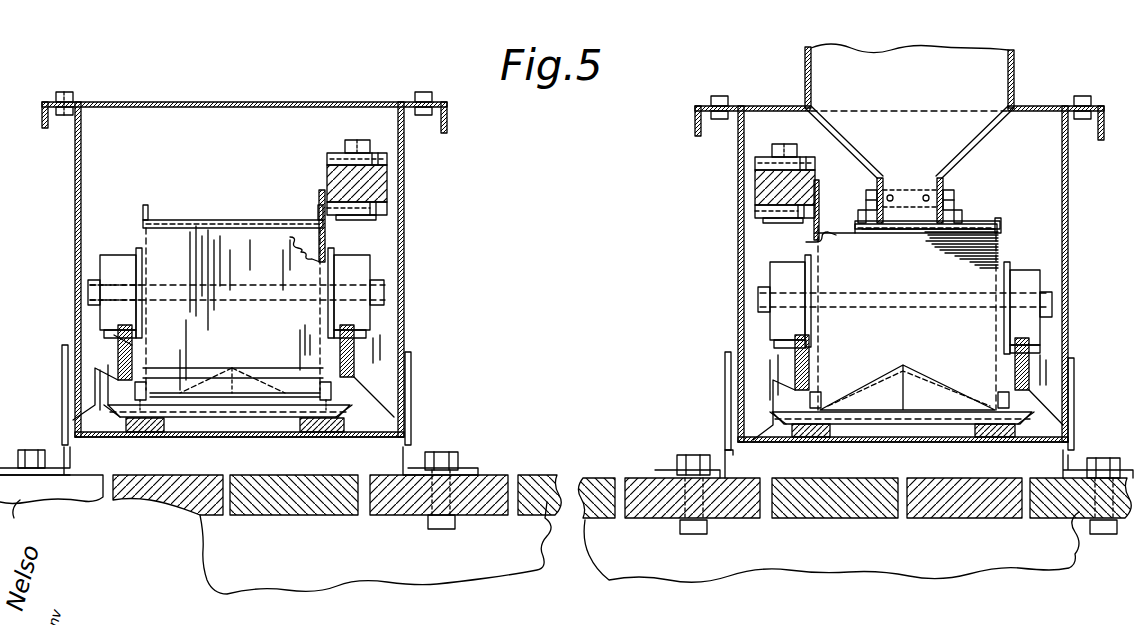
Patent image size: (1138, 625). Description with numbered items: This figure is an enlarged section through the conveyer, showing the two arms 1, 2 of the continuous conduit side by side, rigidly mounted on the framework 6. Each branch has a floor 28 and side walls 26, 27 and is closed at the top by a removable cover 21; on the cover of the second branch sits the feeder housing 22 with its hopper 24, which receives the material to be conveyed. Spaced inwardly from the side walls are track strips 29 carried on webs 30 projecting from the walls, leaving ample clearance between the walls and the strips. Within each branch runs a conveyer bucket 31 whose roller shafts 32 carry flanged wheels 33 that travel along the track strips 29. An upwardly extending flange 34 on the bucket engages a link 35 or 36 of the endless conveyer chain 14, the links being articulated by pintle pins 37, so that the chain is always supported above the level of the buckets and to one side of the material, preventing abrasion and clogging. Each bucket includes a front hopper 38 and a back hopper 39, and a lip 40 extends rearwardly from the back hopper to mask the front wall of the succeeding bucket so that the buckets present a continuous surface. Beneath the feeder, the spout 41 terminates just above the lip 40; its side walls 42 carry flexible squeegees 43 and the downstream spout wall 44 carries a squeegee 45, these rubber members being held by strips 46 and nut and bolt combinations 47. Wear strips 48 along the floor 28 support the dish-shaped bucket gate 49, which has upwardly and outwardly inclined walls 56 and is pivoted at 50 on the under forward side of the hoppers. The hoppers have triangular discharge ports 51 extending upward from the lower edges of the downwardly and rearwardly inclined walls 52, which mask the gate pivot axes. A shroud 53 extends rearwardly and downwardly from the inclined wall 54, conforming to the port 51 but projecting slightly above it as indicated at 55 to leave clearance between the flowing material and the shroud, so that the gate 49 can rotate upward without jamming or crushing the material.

The arm of the continuous conduit 1 is at (575, 268).
The arm of the continuous conduit 2 is at (596, 234).
The framework 6 is at (640, 475).
The endless conveyer chain 14 is at (369, 167).
The removable cover 21 is at (240, 102).
The feeder housing 22 is at (935, 124).
The hopper 24 is at (962, 65).
The side wall 26 is at (75, 186).
The side wall 27 is at (404, 160).
The floor 28 is at (234, 437).
The track strip 29 is at (118, 342).
The web 30 is at (68, 355).
The conveyer bucket 31 is at (233, 284).
The roller shaft 32 is at (385, 292).
The flanged wheel 33 is at (112, 262).
The upwardly extending flange 34 is at (319, 200).
The chain link 35 is at (386, 156).
The chain link 36 is at (387, 182).
The pintle pin 37 is at (358, 142).
The front hopper 38 is at (300, 235).
The back hopper 39 is at (830, 243).
The lip 40 is at (165, 220).
The spout 41 is at (945, 185).
The spout side wall 42 is at (924, 194).
The squeegee 43 is at (858, 216).
The downstream spout wall 44 is at (910, 229).
The squeegee 45 is at (888, 222).
The strip 46 is at (866, 195).
The nut and bolt combination 47 is at (930, 230).
The wear strip 48 is at (142, 433).
The bucket gate 49 is at (178, 417).
The pivot 50 is at (148, 392).
The discharge port 51 is at (222, 368).
The inclined wall 52 is at (266, 380).
The shield or shroud 53 is at (874, 394).
The inclined wall 54 is at (1001, 250).
The clearance 55 is at (910, 372).
The inclined wall of gate 56 is at (1040, 446).